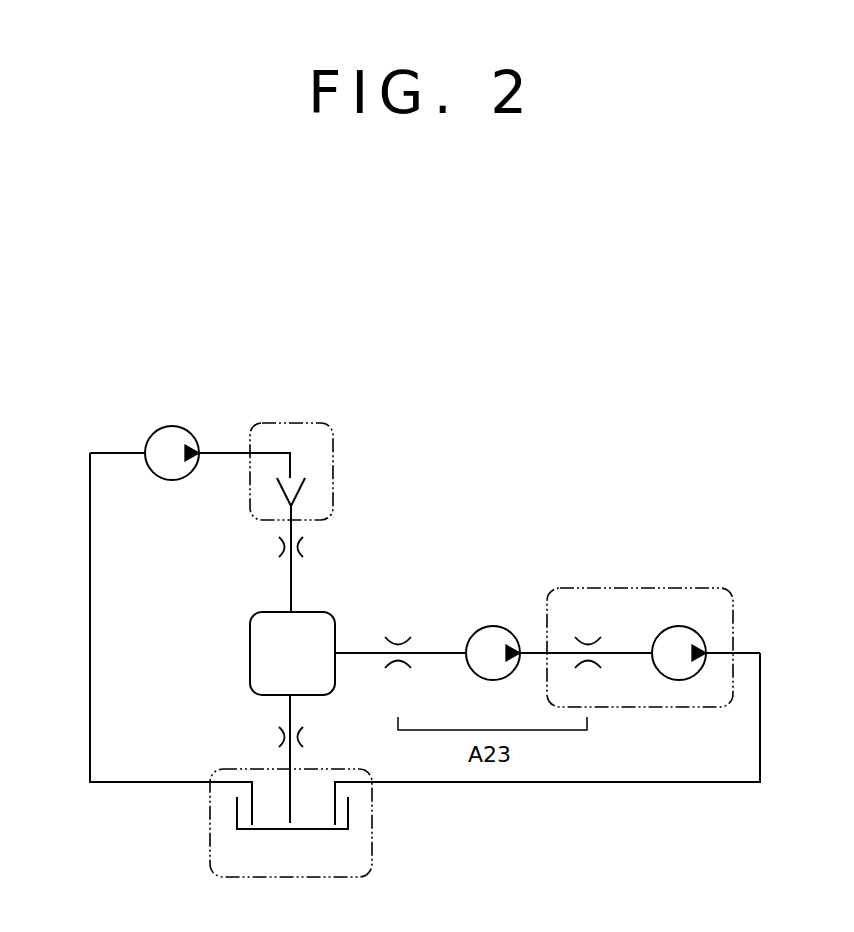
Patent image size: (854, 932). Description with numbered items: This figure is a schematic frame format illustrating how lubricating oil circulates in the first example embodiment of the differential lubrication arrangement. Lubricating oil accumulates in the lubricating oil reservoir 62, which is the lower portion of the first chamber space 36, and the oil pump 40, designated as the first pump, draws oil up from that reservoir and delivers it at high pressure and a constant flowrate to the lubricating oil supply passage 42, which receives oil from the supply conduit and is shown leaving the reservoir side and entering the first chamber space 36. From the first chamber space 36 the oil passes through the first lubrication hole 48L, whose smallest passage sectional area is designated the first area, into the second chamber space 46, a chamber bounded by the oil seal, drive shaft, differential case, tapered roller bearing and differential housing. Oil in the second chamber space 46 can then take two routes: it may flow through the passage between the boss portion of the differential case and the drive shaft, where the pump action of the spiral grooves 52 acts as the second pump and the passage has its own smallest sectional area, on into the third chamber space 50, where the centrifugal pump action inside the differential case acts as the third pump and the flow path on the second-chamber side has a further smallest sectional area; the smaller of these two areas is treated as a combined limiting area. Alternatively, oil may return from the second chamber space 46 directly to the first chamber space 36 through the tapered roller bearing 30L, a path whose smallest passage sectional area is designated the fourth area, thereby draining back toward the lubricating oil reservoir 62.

The oil pump 40 is at (163, 478).
The lubricating oil supply passage 42 is at (224, 451).
The first chamber space 36 is at (333, 470).
The first lubrication hole 48L is at (276, 545).
The second chamber space 46 is at (312, 612).
The tapered roller bearing 30L is at (277, 737).
The spiral grooves 52 is at (527, 610).
The third chamber space 50 is at (622, 588).
The lubricating oil reservoir 62 is at (292, 832).